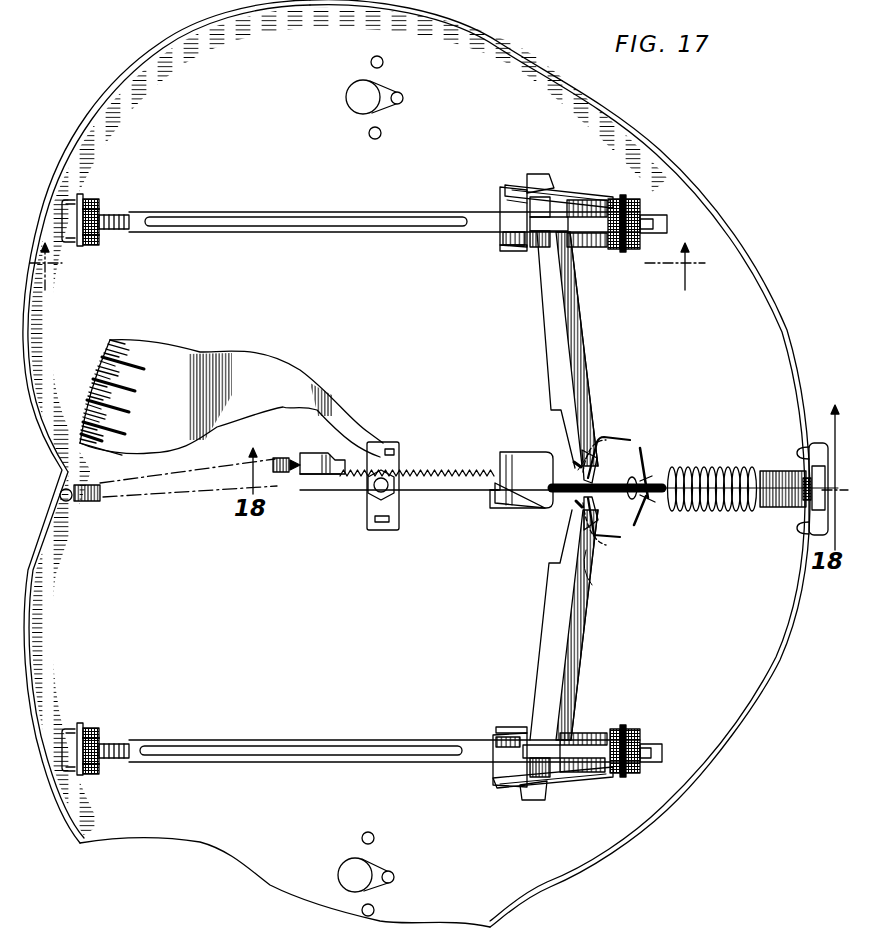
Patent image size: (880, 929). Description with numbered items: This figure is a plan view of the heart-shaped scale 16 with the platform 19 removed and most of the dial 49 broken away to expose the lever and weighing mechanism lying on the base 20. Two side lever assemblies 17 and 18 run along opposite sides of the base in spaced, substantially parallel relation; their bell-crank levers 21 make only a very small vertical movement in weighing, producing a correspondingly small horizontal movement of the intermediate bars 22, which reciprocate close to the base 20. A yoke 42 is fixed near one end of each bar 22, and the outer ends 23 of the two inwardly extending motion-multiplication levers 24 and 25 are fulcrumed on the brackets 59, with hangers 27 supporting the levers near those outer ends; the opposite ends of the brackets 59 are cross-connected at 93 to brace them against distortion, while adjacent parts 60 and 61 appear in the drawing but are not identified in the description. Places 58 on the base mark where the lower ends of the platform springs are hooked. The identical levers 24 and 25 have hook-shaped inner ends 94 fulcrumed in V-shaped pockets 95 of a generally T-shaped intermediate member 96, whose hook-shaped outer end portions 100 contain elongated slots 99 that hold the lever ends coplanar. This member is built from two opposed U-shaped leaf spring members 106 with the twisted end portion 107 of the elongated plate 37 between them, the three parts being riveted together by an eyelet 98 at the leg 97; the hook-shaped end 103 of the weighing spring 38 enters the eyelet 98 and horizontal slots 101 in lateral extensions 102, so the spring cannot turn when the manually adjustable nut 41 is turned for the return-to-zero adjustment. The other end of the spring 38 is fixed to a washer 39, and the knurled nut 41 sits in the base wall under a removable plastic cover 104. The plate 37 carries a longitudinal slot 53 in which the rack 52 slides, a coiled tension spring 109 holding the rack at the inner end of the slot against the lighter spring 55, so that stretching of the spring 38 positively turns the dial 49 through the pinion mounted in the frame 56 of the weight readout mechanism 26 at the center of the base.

The scale 16 is at (689, 174).
The base 20 is at (551, 886).
The hooking places for platform springs 58 is at (396, 485).
The side lever assembly 18 is at (333, 212).
The side lever assembly 17 is at (150, 763).
The intermediate bar 22 is at (268, 232).
The bracket 59 is at (97, 200).
The bracket (60'') 60 is at (503, 200).
The cross-connection of bracket ends 93 is at (582, 198).
The hanger 27 is at (561, 190).
The outer ends of motion-multiplication levers 23 is at (550, 178).
The yoke 42 is at (545, 232).
The nut (61'') 61 is at (632, 250).
The bell-crank lever 21 is at (631, 208).
The platform 19 is at (366, 275).
The motion-multiplication lever 25 is at (548, 322).
The motion-multiplication lever 24 is at (542, 622).
The dial 49 is at (105, 376).
The light tension spring 55 is at (93, 500).
The rack 52 is at (446, 467).
The weight readout mechanism 26 is at (331, 479).
The frame 56 is at (398, 443).
The longitudinal slot 53 is at (500, 507).
The elongated horizontal plate 37 is at (520, 510).
The twisted elongated end portion of plate 107 is at (553, 485).
The leg of T-shaped member 97 is at (606, 486).
The hook-shaped inner ends of levers 94 is at (594, 472).
The hook-shaped outer end portions of cross-bar 100 is at (615, 438).
The elongated slots 99 is at (588, 455).
The coiled tension spring 109 is at (575, 462).
The generally T-shaped intermediate unit or member 96 is at (583, 462).
The V-shaped pockets 95 is at (575, 506).
The lateral extensions 102 is at (645, 456).
The horizontal slots 101 is at (645, 512).
The eyelet 98 is at (641, 471).
The hook-shaped end of weighing spring 103 is at (650, 500).
The U-shaped bent leaf spring member 106 is at (586, 552).
The weighing spring 38 is at (726, 466).
The washer 39 is at (756, 509).
The manually adjustable nut 41 is at (802, 507).
The removable plastic cover 104 is at (815, 445).